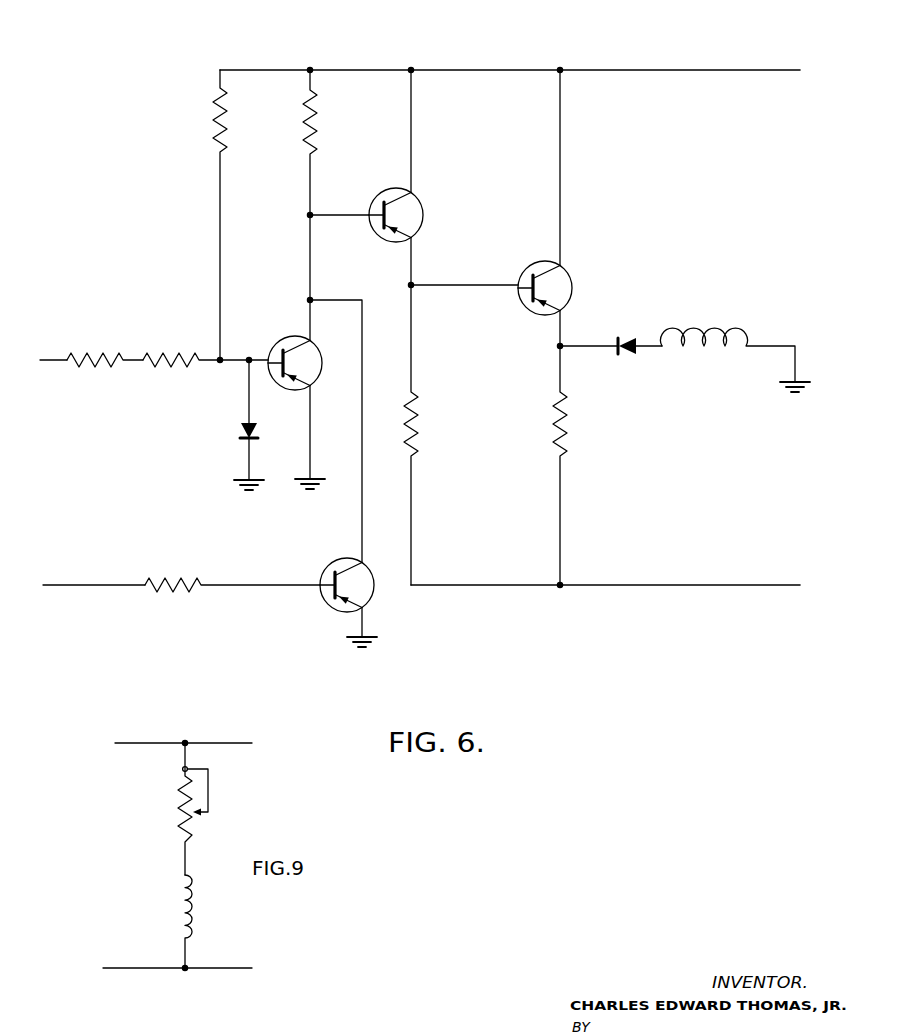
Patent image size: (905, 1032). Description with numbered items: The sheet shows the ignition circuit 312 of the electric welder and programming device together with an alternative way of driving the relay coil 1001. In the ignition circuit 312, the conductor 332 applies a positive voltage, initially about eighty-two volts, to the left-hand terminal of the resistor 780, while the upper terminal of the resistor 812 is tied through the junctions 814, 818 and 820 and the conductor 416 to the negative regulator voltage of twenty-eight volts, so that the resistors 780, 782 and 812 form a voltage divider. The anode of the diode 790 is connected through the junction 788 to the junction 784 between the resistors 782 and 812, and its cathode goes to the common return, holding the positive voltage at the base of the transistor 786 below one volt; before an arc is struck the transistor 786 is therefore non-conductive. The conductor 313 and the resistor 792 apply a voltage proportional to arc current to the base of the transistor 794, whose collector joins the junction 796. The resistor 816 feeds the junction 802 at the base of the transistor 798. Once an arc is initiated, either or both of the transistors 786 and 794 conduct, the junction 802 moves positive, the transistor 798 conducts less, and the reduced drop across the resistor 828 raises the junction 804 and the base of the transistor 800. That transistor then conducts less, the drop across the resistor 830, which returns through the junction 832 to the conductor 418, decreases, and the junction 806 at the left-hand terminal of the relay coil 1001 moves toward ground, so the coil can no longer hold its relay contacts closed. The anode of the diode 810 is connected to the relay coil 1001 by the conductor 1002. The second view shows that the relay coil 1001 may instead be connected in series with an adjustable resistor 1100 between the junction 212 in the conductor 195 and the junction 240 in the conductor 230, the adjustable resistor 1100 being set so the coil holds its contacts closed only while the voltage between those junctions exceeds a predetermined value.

In FIG. 6, the ignition circuit 312 is at (131, 217).
In FIG. 6, the conductor 416 is at (718, 76).
In FIG. 6, the conductor 418 is at (734, 585).
In FIG. 6, the resistor 812 is at (215, 112).
In FIG. 6, the junction 814 is at (311, 69).
In FIG. 6, the resistor 816 is at (318, 121).
In FIG. 6, the junction 818 is at (411, 69).
In FIG. 6, the junction 820 is at (561, 69).
In FIG. 6, the junction 802 is at (309, 216).
In FIG. 6, the transistor 798 is at (424, 205).
In FIG. 6, the junction 804 is at (413, 284).
In FIG. 6, the resistor 828 is at (419, 437).
In FIG. 6, the junction 796 is at (312, 299).
In FIG. 6, the transistor 786 is at (318, 347).
In FIG. 6, the conductor 332 is at (47, 362).
In FIG. 6, the resistor 780 is at (98, 348).
In FIG. 6, the resistor 782 is at (173, 348).
In FIG. 6, the junction 784 is at (220, 361).
In FIG. 6, the junction 788 is at (249, 357).
In FIG. 6, the diode 790 is at (239, 432).
In FIG. 6, the transistor 800 is at (572, 278).
In FIG. 6, the junction 806 is at (557, 346).
In FIG. 6, the resistor 830 is at (568, 418).
In FIG. 6, the junction 832 is at (561, 590).
In FIG. 6, the diode 810 is at (625, 356).
In FIG. 6, the conductor 1002 is at (645, 345).
In FIG. 6, the relay coil 1001 is at (710, 360).
In FIG. 9, the relay coil 1001 is at (193, 922).
In FIG. 6, the conductor 313 is at (70, 583).
In FIG. 6, the resistor 792 is at (160, 597).
In FIG. 6, the transistor 794 is at (326, 602).
In FIG. 9, the conductor 195 is at (252, 743).
In FIG. 9, the junction 212 is at (186, 743).
In FIG. 9, the adjustable resistor 1100 is at (178, 818).
In FIG. 9, the junction 240 is at (184, 969).
In FIG. 9, the conductor 230 is at (218, 969).